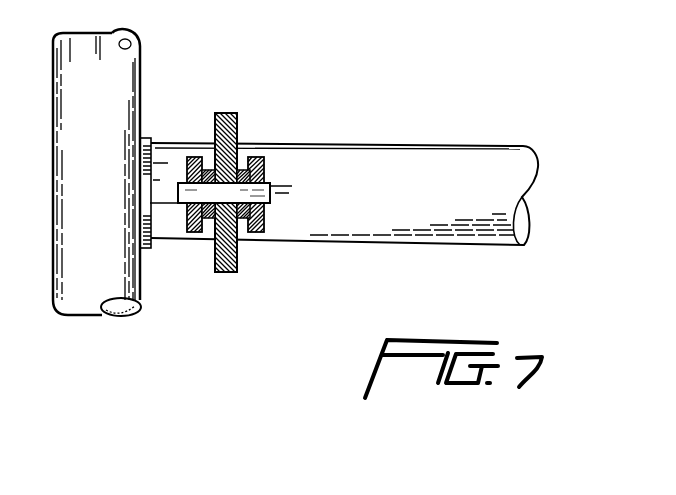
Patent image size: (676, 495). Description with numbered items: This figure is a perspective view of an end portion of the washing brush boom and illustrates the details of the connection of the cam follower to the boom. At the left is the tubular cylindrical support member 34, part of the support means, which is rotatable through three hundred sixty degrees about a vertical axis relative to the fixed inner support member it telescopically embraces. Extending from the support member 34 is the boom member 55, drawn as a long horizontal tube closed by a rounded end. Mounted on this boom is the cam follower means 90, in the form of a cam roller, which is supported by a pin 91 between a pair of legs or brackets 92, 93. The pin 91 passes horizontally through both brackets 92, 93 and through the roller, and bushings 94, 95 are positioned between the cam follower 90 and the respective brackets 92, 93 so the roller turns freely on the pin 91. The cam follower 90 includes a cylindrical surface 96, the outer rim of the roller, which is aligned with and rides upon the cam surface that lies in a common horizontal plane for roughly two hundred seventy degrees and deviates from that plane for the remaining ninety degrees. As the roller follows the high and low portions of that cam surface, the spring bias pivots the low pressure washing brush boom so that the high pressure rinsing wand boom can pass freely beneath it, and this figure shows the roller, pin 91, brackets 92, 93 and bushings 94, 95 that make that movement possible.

The tubular cylindrical support member 34 is at (107, 94).
The tubular arm 55 is at (426, 206).
The cam follower means 90 is at (267, 199).
The pin 91 is at (272, 196).
The leg or bracket 92 is at (196, 155).
The leg or bracket 93 is at (268, 166).
The bushing 94 is at (205, 234).
The bushing 95 is at (246, 167).
The cylindrical surface 96 is at (223, 273).